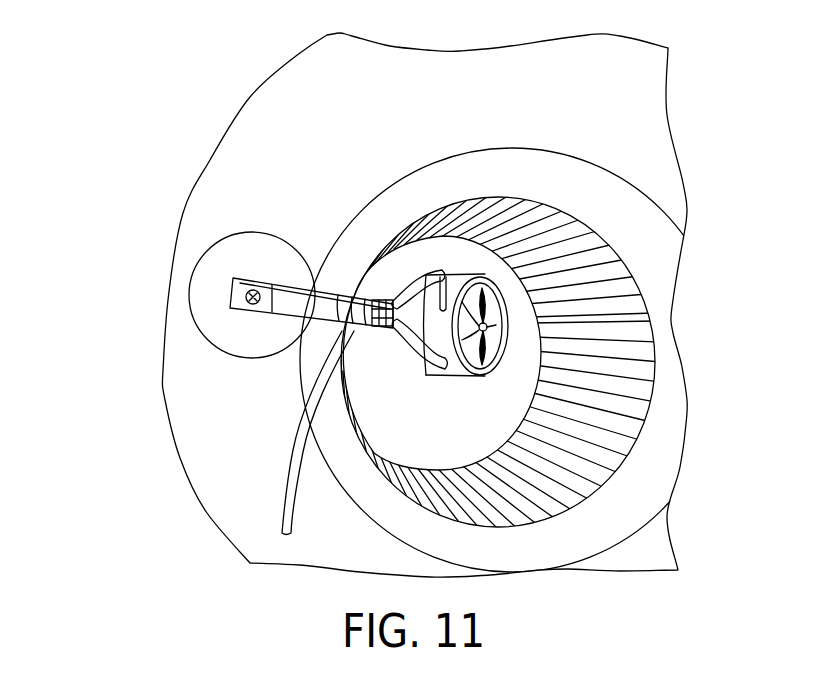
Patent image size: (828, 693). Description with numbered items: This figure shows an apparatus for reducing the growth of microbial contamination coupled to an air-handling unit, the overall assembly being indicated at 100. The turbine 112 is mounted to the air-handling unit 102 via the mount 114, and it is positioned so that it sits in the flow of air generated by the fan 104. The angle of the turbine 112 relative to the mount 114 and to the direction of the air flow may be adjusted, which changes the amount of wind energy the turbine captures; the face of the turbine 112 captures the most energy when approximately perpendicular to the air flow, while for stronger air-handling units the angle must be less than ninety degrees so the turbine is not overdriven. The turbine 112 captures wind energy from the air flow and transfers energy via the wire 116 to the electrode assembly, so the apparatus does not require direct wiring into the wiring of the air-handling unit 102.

The liquid dispensing assembly 100 is at (166, 150).
The air-handling unit 102 is at (312, 140).
The fan 104 is at (632, 217).
The turbine 112 is at (443, 276).
The mount 114 is at (217, 330).
The wire 116 is at (282, 490).